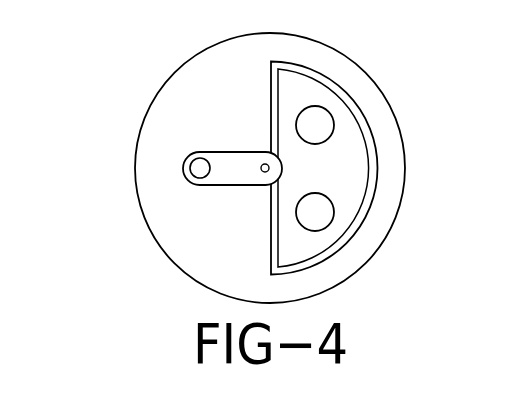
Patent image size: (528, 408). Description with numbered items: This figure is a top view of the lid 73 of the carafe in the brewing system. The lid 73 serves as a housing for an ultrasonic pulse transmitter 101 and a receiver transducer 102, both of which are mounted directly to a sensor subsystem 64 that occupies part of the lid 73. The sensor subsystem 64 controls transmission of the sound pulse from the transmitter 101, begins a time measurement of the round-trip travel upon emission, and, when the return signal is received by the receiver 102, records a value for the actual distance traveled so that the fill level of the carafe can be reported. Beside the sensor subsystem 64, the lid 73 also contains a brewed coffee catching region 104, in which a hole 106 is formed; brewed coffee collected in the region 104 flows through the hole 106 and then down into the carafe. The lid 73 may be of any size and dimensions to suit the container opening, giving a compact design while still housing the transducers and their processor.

The lid 73 is at (326, 41).
The brewed coffee catching region 104 is at (219, 110).
The sensor subsystem 64 is at (350, 170).
The hole 106 is at (197, 163).
The ultrasonic pulse transmitter 101 is at (333, 115).
The receiver transducer 102 is at (332, 218).